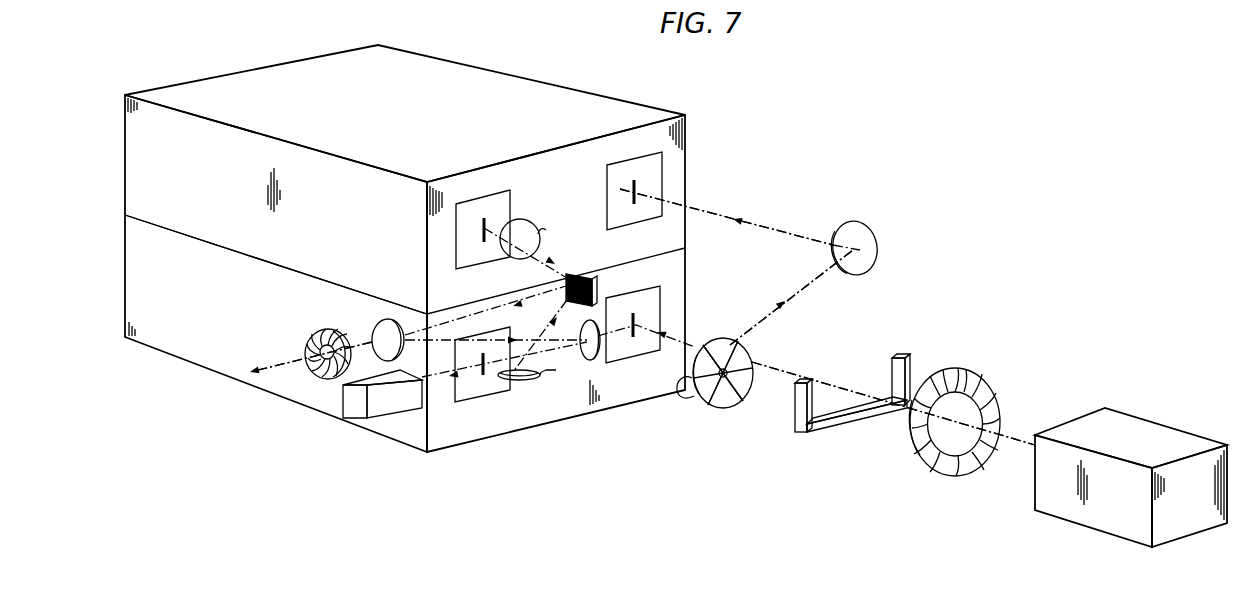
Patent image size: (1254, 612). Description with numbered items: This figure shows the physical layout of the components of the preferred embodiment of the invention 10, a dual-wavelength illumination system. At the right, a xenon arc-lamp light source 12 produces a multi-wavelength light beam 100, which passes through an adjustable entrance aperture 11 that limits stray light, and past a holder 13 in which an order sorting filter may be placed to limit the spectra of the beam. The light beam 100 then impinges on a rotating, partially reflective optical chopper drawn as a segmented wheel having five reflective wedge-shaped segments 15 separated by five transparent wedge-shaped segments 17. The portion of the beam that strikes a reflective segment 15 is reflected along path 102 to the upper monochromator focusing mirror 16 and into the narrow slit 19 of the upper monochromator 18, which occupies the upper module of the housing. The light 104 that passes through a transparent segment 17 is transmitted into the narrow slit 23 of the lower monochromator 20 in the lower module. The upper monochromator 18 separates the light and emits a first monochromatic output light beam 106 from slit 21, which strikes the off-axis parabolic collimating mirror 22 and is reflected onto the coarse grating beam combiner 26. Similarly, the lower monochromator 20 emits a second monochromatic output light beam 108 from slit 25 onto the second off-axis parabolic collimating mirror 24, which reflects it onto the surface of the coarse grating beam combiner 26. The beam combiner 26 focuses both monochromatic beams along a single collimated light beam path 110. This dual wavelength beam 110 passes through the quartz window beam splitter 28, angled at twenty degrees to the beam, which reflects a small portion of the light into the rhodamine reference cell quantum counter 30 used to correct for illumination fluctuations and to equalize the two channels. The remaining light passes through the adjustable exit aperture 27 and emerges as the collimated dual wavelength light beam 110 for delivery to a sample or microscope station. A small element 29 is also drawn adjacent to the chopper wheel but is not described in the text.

The invention 10 is at (810, 146).
The adjustable entrance aperture 11 is at (920, 446).
The xenon arc-lamp light source 12 is at (1054, 500).
The holder 13 is at (820, 432).
The reflective wedge-shaped segments 15 is at (700, 350).
The upper monochromator focusing mirror 16 is at (872, 237).
The transparent wedge-shaped segments 17 is at (723, 352).
The upper monochromator 18 is at (125, 140).
The narrow slit 19 is at (632, 184).
The monochromator 20 is at (125, 277).
The slit 21 is at (482, 216).
The off-axis parabolic collimating mirror 22 is at (533, 224).
The narrow slit 23 is at (636, 314).
The second off-axis parabolic collimating mirror 24 is at (537, 378).
The slit 25 is at (482, 378).
The coarse grating beam combiner 26 is at (572, 272).
The adjustable exit aperture 27 is at (314, 333).
The quartz window beam splitter 28 is at (390, 318).
The motor 29 is at (677, 394).
The reference cell quantum counter 30 is at (352, 405).
The multi-chromatic light beam 100 is at (847, 388).
The first multi-chromatic light beam 102 is at (711, 211).
The second multi-chromatic light beam 104 is at (672, 342).
The first monochromatic output light beam 106 is at (500, 223).
The second monochromatic output light beam 108 is at (493, 372).
The collimated dual wavelength light beam 110 is at (289, 360).